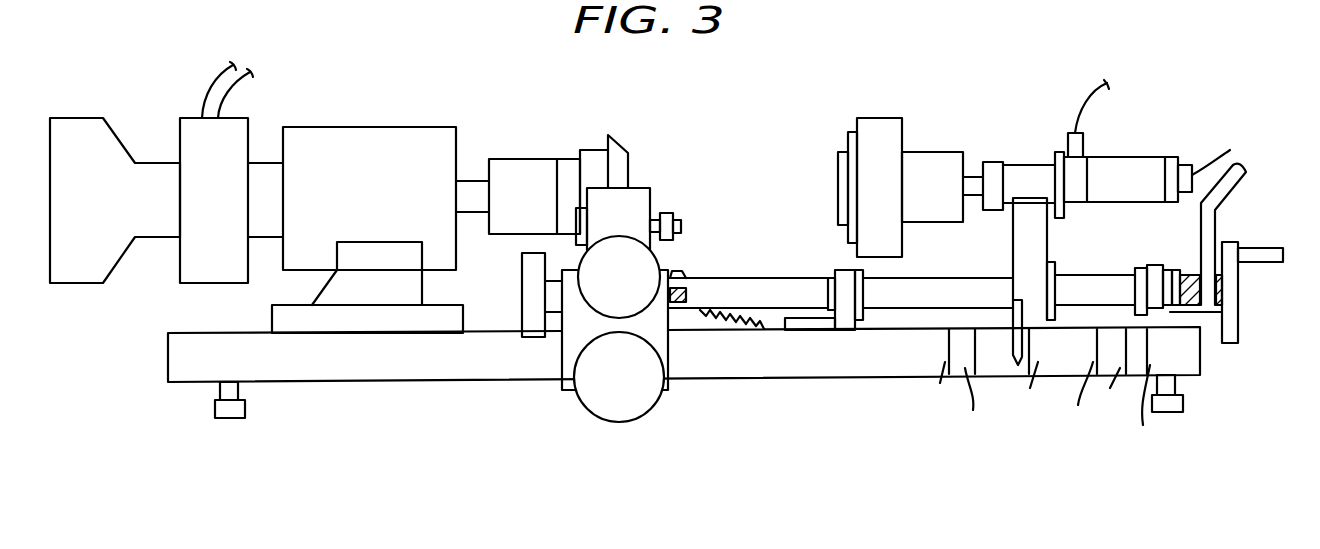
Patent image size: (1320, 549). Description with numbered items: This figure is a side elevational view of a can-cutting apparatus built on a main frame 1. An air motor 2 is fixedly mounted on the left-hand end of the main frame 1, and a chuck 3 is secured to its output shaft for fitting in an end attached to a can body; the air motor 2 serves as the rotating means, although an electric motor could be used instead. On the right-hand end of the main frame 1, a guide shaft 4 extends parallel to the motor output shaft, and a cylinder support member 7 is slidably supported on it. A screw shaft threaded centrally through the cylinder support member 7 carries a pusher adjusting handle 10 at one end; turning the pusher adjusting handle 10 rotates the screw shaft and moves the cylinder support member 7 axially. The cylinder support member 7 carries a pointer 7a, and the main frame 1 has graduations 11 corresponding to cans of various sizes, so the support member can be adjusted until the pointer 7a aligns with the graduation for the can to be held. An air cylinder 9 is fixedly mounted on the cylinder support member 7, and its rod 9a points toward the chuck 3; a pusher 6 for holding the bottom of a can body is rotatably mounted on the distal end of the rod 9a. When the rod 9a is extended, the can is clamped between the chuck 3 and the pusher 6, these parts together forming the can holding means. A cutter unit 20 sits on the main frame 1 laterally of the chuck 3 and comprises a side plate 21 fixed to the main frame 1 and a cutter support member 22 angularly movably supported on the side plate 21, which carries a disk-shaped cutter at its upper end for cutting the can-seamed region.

The main frame 1 is at (357, 372).
The air motor 2 is at (341, 135).
The chuck 3 is at (593, 146).
The guide shaft 4 is at (750, 287).
The pusher 6 is at (876, 128).
The cylinder support member 7 is at (1017, 232).
The pointer 7a is at (1020, 297).
The air cylinder 9 is at (1028, 165).
The rod 9a is at (975, 175).
The pusher adjusting handle 10 is at (1232, 343).
The graduations 11 is at (940, 460).
The cutter unit 20 is at (600, 422).
The side plate 21 is at (665, 355).
The cutter support member 22 is at (637, 190).